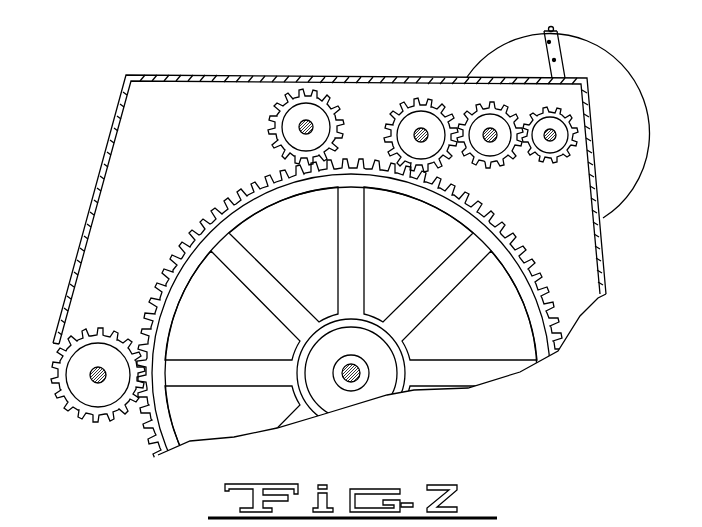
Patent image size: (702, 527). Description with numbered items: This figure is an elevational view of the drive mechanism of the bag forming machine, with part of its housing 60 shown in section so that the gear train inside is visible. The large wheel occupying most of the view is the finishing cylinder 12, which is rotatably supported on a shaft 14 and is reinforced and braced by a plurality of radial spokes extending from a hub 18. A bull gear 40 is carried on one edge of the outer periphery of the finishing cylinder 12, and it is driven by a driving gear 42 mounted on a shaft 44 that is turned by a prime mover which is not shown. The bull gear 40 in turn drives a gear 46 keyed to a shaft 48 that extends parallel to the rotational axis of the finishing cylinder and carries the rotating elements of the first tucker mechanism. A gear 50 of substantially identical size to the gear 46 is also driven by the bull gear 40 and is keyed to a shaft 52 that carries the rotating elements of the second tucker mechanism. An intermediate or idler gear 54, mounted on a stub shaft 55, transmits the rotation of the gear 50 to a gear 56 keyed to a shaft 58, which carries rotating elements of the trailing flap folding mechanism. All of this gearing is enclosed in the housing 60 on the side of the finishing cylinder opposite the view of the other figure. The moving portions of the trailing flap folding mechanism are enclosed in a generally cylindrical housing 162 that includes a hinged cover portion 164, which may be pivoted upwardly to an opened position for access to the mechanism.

The finishing cylinder 12 is at (280, 198).
The shaft 14 is at (344, 372).
The hub 18 is at (297, 397).
The bull gear 40 is at (242, 192).
The driving gear 42 is at (81, 383).
The shaft 44 is at (90, 378).
The gear 46 is at (301, 127).
The shaft 48 is at (310, 124).
The gear 50 is at (412, 128).
The shaft 52 is at (418, 135).
The idler gear 54 is at (500, 137).
The stub shaft 55 is at (492, 131).
The gear 56 is at (552, 135).
The shaft 58 is at (551, 127).
The housing 60 is at (173, 75).
The cylindrical housing 162 is at (509, 35).
The hinged cover portion 164 is at (637, 118).